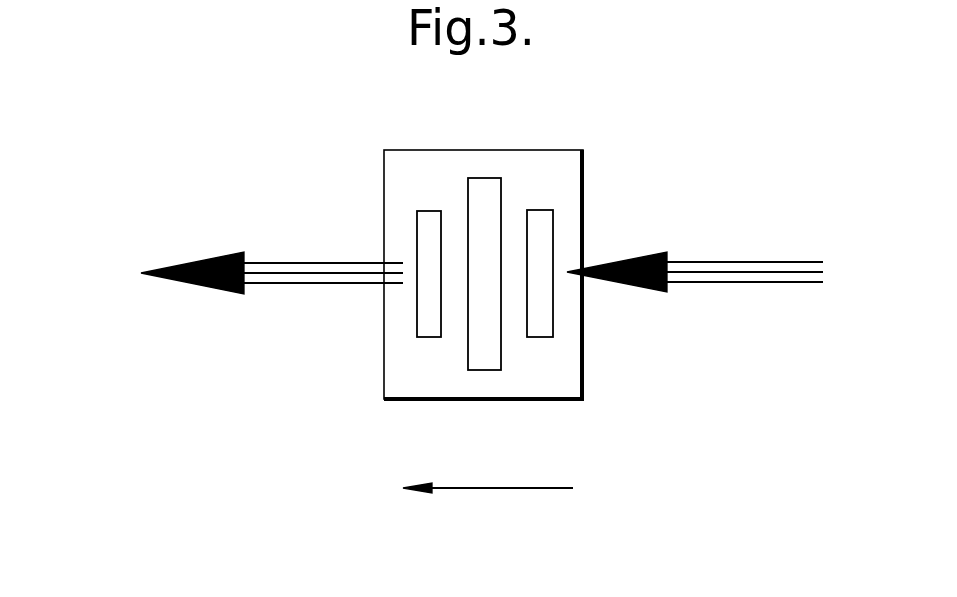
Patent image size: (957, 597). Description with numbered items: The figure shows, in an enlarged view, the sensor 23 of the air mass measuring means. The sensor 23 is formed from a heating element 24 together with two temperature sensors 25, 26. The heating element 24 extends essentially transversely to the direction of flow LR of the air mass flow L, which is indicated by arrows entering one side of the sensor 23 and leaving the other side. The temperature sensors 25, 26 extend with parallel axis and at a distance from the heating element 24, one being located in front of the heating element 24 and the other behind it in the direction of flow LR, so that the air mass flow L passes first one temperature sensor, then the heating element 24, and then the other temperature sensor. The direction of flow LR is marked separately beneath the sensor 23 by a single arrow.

The sensor 23 is at (560, 367).
The heating element 24 is at (488, 198).
The temperature sensor 25 is at (540, 232).
The temperature sensor 26 is at (430, 225).
The air mass flow L is at (310, 270).
The direction of flow LR is at (498, 489).